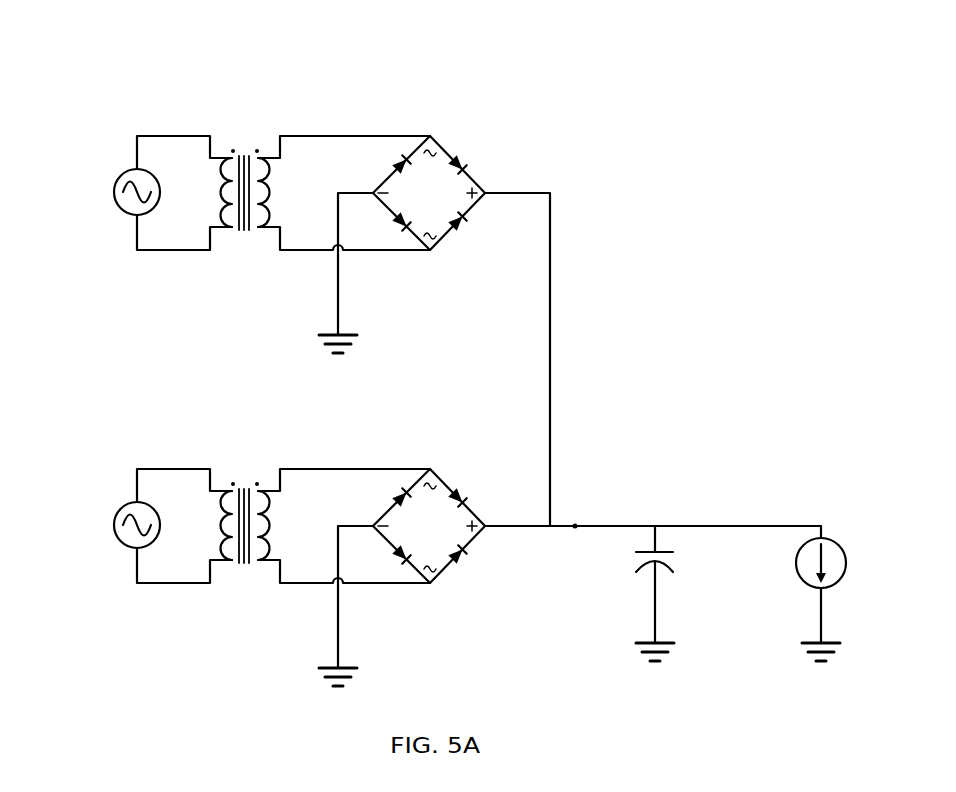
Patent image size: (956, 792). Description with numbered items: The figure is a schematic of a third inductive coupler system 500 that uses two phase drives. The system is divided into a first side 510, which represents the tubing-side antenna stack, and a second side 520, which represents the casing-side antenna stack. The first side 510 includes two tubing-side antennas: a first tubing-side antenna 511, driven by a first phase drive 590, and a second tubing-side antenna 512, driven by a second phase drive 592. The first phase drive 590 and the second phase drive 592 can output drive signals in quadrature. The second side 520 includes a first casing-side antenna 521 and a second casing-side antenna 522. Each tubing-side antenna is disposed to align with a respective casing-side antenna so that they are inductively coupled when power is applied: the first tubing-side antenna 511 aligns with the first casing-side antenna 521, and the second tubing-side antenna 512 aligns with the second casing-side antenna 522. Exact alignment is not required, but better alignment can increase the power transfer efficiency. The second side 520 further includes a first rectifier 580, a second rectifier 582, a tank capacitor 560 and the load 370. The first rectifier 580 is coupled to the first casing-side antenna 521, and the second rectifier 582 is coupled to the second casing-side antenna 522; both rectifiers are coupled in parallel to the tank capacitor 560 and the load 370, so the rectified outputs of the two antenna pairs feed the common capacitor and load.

The third inductive coupler system 500 is at (784, 34).
The first side 510 is at (242, 122).
The second side 520 is at (848, 122).
The first phase drive 590 is at (147, 193).
The second phase drive 592 is at (147, 526).
The first tubing-side antenna 511 is at (221, 189).
The second tubing-side antenna 512 is at (221, 522).
The first casing-side antenna 521 is at (344, 193).
The second casing-side antenna 522 is at (344, 526).
The first rectifier 580 is at (434, 331).
The second rectifier 582 is at (570, 577).
The tank capacitor 560 is at (678, 593).
The load 370 is at (844, 593).